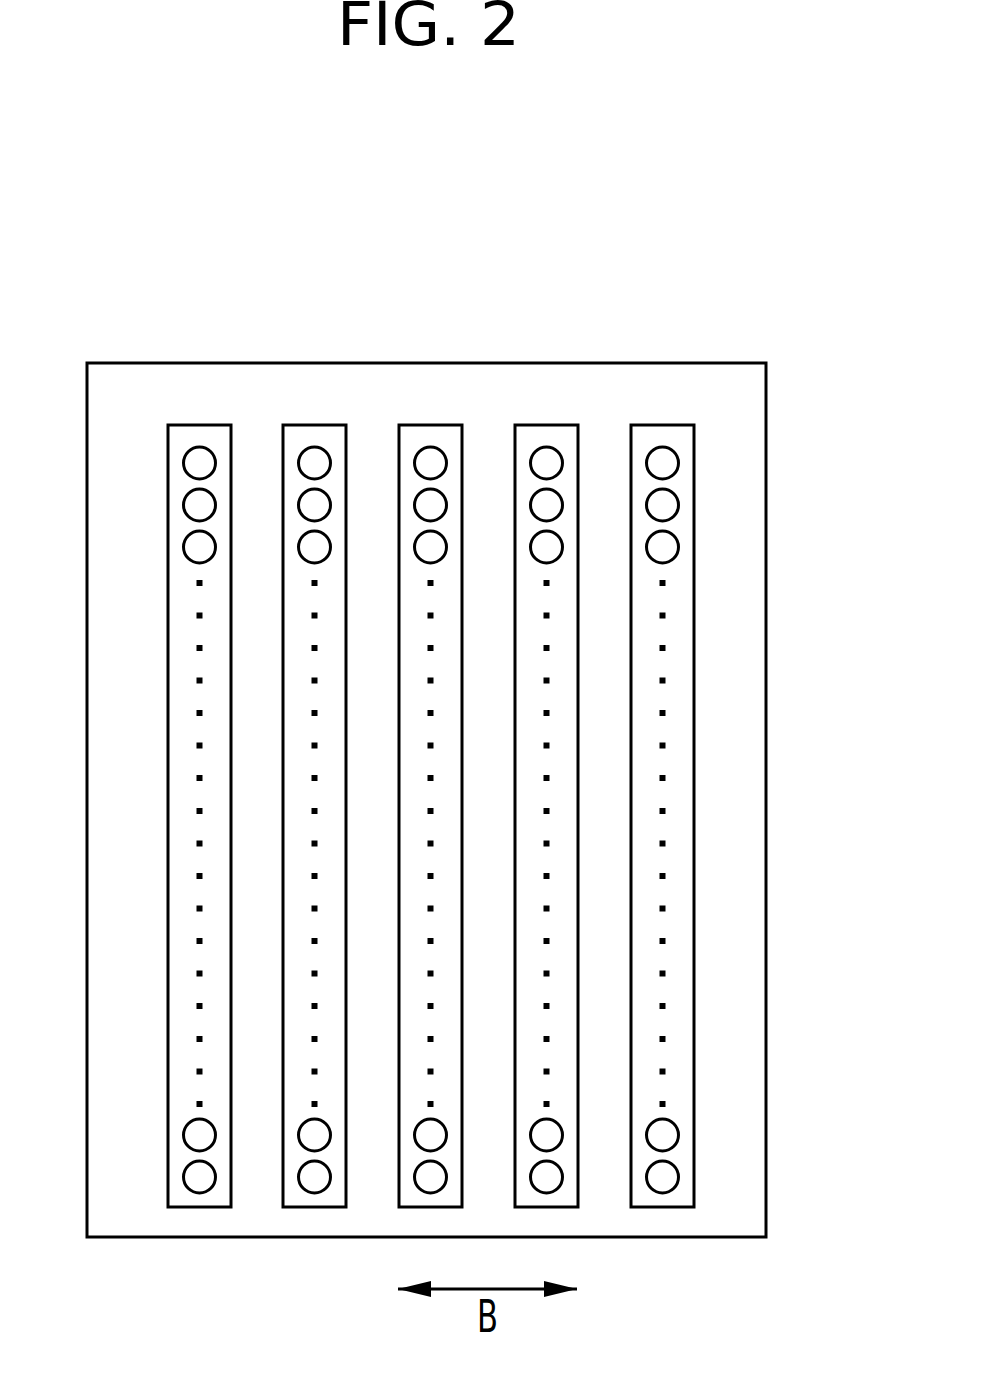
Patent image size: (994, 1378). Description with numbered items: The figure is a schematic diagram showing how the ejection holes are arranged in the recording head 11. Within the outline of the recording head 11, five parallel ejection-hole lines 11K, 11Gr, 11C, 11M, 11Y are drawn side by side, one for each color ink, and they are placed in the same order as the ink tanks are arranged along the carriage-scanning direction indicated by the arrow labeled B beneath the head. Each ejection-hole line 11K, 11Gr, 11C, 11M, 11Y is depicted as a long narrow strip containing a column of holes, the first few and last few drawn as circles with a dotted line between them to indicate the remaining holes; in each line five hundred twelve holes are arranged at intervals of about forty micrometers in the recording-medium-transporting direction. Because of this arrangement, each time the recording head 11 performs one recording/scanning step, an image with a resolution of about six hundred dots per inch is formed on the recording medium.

The recording head 11 is at (766, 433).
The ejection-hole line for black ink 11K is at (200, 425).
The ejection-hole line for gray ink 11Gr is at (316, 425).
The ejection-hole line for cyan ink 11C is at (431, 425).
The ejection-hole line for magenta ink 11M is at (547, 425).
The ejection-hole line for yellow ink 11Y is at (662, 425).